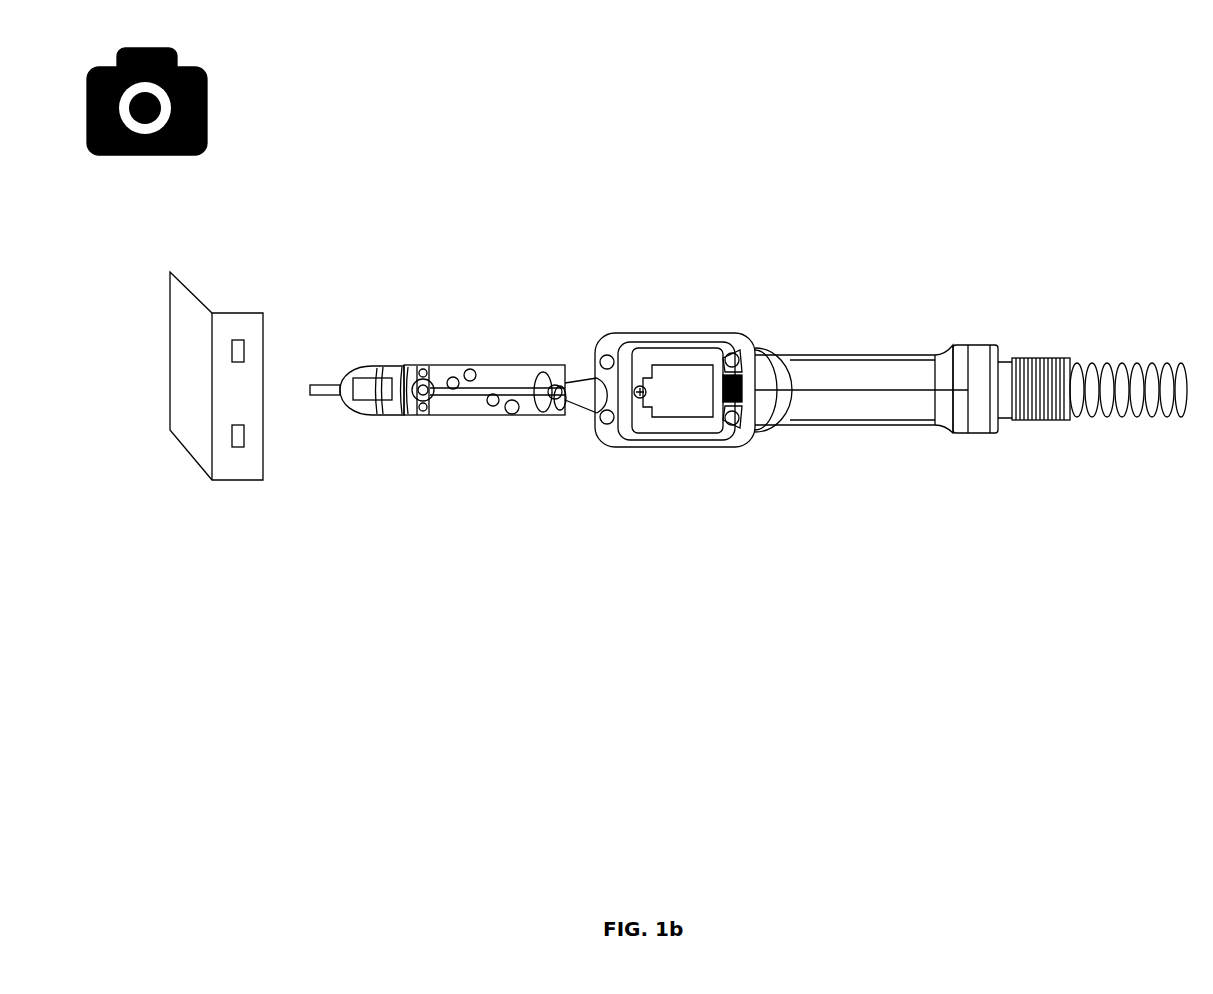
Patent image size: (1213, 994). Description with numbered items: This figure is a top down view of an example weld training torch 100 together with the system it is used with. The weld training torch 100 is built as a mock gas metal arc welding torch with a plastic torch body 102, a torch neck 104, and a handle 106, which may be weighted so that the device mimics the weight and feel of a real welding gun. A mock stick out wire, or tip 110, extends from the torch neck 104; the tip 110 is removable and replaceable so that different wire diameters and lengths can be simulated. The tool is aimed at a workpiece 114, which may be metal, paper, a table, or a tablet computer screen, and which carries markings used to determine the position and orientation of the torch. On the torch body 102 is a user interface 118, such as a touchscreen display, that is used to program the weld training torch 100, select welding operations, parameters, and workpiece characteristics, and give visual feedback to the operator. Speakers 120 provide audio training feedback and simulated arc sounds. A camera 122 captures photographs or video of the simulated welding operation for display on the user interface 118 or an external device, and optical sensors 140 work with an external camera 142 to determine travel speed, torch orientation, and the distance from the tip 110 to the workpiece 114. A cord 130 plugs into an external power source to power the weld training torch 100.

The weld training torch 100 is at (414, 214).
The torch body 102 is at (727, 426).
The torch neck 104 is at (460, 413).
The handle 106 is at (868, 395).
The mock stick out wire (tip) 110 is at (330, 396).
The workpiece 114 is at (238, 463).
The user interface 118 is at (687, 397).
The speakers 120 is at (735, 375).
The camera 122 is at (377, 377).
The cord 130 is at (1150, 332).
The optical sensors 140 is at (435, 367).
The camera 142 is at (215, 70).